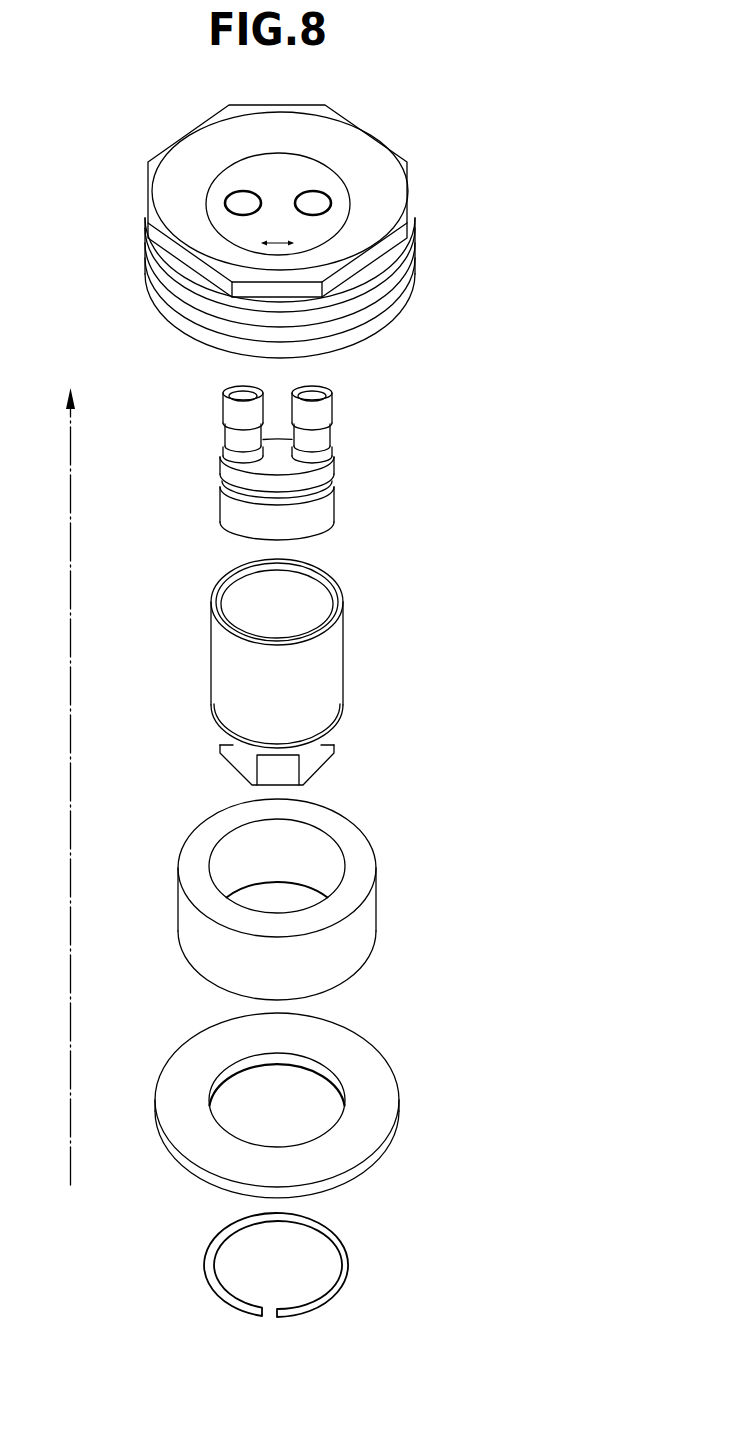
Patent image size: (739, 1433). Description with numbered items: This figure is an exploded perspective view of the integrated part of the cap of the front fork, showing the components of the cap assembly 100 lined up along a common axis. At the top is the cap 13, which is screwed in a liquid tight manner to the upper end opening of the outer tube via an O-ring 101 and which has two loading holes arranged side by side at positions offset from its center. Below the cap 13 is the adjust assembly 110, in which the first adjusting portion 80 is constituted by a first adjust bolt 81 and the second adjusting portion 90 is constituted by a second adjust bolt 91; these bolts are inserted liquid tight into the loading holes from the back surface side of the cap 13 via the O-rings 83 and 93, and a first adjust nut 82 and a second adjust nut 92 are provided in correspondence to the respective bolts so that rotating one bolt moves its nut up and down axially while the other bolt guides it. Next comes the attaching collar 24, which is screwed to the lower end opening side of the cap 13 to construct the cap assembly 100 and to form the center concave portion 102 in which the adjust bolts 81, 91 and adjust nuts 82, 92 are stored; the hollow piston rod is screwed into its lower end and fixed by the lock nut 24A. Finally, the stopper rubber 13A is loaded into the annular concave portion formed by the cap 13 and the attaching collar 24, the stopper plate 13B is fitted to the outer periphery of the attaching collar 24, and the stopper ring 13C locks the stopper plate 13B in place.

The cap assembly 100 is at (141, 136).
The cap 13 is at (179, 182).
The O-ring 101 is at (141, 213).
The adjust assembly 110 is at (348, 451).
The second adjusting portion 90 is at (234, 393).
The second adjust bolt 91 is at (204, 424).
The O-ring 93 is at (225, 428).
The first adjusting portion 80 is at (326, 393).
The first adjust bolt 81 is at (357, 424).
The O-ring 83 is at (333, 422).
The first adjust nut 82 is at (303, 475).
The second adjust nut 92 is at (307, 512).
The attaching collar 24 is at (337, 662).
The center concave portion 102 is at (317, 596).
The lock nut 24A is at (318, 755).
The stopper rubber 13A is at (365, 863).
The stopper plate 13B is at (395, 1092).
The stopper ring 13C is at (350, 1260).